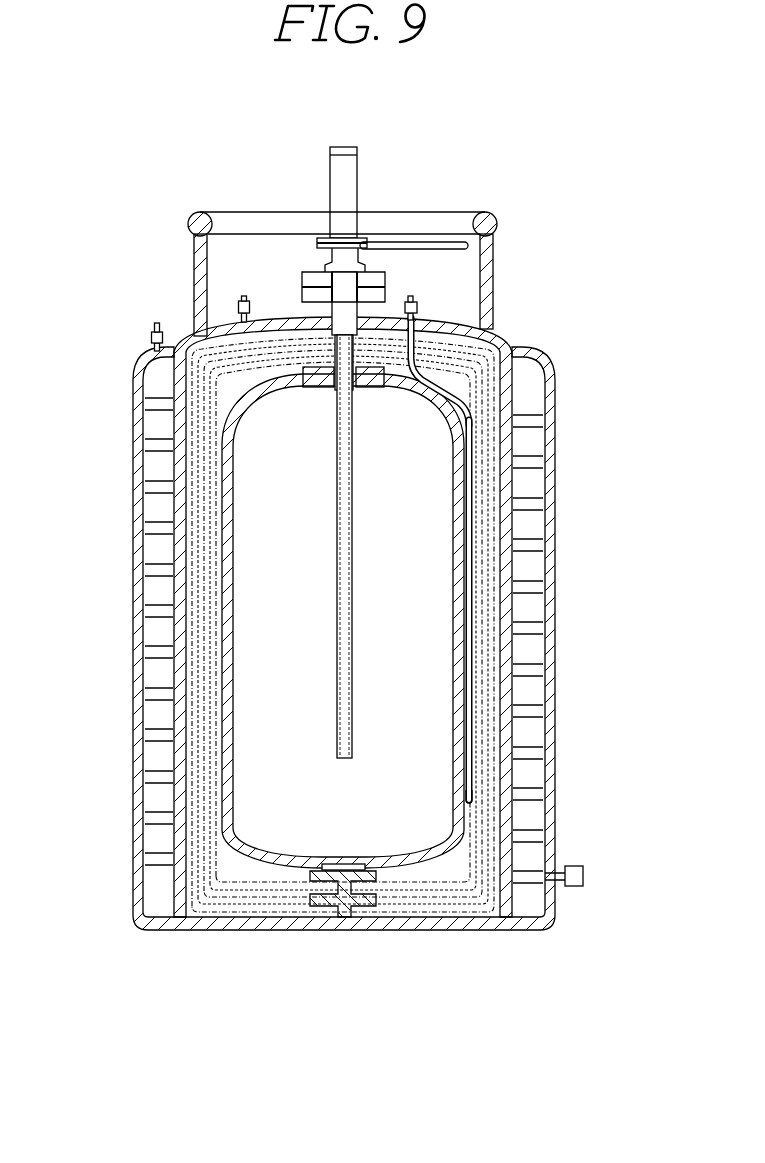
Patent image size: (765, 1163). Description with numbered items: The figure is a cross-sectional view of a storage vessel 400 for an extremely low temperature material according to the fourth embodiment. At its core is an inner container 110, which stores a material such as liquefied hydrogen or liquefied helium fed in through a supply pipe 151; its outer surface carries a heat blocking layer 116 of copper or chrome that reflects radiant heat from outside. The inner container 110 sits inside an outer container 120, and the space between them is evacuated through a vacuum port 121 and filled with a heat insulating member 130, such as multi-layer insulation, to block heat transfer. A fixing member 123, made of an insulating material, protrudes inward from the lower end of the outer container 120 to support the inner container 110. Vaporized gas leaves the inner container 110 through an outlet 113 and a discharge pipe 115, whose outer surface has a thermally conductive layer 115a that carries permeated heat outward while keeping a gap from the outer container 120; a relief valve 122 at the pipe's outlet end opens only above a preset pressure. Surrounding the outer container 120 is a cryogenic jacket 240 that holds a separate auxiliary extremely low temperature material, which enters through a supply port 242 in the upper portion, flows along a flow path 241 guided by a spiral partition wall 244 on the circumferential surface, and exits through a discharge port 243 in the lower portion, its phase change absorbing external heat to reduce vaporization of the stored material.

The storage vessel 400 is at (358, 103).
The inner container 110 is at (263, 618).
The outlet 113 is at (472, 808).
The discharge pipe 115 is at (520, 563).
The thermally conductive layer 115a is at (471, 420).
The heat blocking layer 116 is at (231, 716).
The outer container 120 is at (180, 632).
The vacuum port 121 is at (238, 311).
The relief valve 122 is at (418, 310).
The fixing member 123 is at (350, 920).
The heat insulating member 130 is at (200, 585).
The supply pipe 151 is at (342, 178).
The cryogenic jacket 240 is at (138, 527).
The flow path 241 is at (158, 468).
The supply port 242 is at (151, 342).
The discharge port 243 is at (580, 866).
The partition wall 244 is at (160, 445).